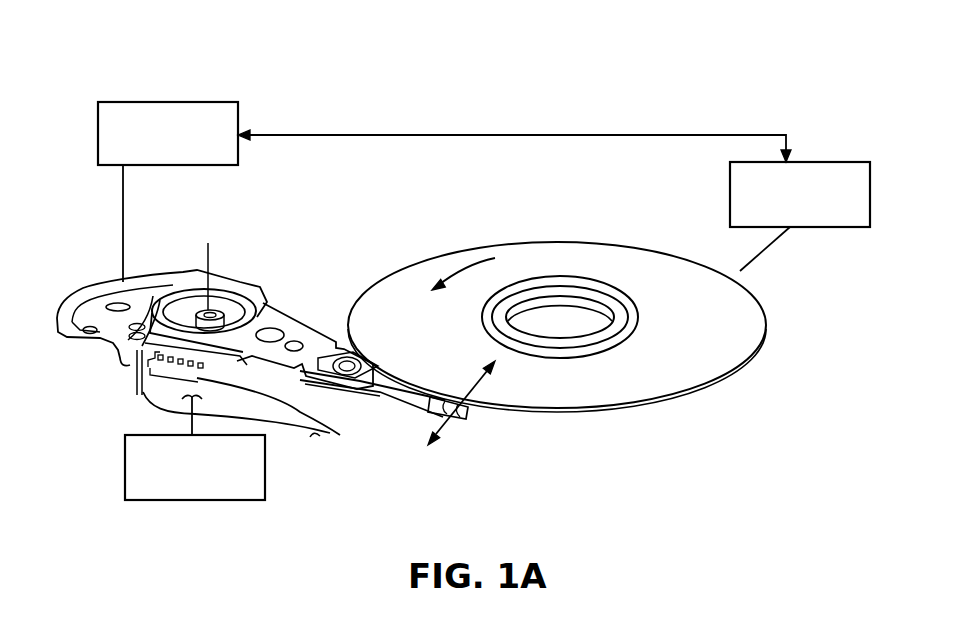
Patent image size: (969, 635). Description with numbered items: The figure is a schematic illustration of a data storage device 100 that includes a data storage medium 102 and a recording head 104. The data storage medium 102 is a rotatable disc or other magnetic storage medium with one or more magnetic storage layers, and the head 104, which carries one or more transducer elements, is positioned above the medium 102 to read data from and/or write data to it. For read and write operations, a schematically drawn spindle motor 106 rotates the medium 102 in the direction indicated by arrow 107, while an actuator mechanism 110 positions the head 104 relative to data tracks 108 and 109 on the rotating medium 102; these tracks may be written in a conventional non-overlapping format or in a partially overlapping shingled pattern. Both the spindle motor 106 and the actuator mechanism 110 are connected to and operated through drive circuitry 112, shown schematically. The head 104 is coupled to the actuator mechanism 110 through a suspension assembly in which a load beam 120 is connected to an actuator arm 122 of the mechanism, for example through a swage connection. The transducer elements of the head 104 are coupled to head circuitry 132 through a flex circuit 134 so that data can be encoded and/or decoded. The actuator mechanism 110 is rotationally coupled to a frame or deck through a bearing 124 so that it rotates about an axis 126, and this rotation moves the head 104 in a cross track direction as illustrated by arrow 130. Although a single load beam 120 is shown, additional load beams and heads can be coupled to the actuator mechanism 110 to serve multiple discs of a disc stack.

The data storage device 100 is at (692, 94).
The data storage medium 102 is at (655, 266).
The recording head 104 is at (467, 413).
The spindle motor 106 is at (836, 162).
The arrow 107 is at (462, 273).
The data track 108 is at (627, 327).
The data track 109 is at (573, 277).
The actuator mechanism 110 is at (229, 269).
The drive circuitry 112 is at (207, 101).
The load beam 120 is at (376, 380).
The actuator arm 122 is at (300, 311).
The bearing 124 is at (204, 312).
The axis 126 is at (203, 262).
The arrow 130 is at (462, 392).
The head circuitry 132 is at (125, 467).
The flex circuit 134 is at (250, 408).